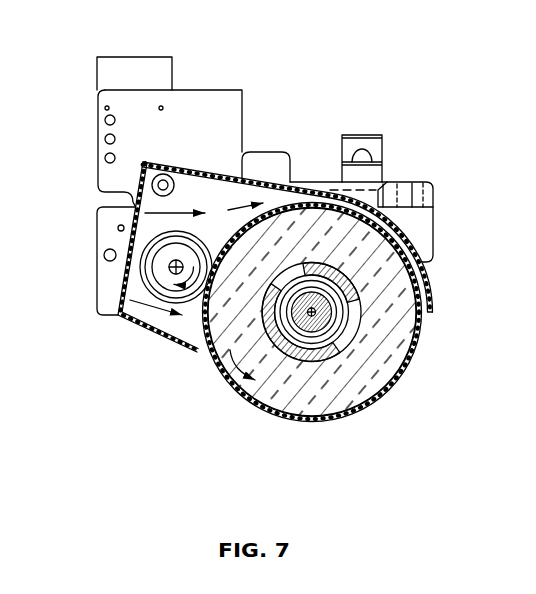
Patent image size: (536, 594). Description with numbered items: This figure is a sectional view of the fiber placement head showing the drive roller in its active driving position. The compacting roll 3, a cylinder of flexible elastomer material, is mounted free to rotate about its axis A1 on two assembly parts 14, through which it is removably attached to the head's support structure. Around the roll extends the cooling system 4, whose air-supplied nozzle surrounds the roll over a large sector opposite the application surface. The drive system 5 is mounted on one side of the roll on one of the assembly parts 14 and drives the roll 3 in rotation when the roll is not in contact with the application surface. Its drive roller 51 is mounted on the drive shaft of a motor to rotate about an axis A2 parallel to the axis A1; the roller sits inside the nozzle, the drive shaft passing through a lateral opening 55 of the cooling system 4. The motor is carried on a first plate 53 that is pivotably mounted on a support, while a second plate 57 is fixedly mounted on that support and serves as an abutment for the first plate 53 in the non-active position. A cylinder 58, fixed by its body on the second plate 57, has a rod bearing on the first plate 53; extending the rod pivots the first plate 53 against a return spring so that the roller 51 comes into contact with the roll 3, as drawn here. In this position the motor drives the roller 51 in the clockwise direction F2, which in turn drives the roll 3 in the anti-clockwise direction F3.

The roll 3 is at (362, 400).
The cooling system 4 is at (307, 183).
The drive system 5 is at (195, 88).
The assembly parts 14 is at (414, 182).
The drive roller 51 is at (162, 258).
The first plate 53 is at (107, 297).
The lateral opening 55 is at (156, 232).
The second plate 57 is at (100, 152).
The cylinder 58 is at (133, 62).
The axis of rotation of the roll A1 is at (311, 316).
The axis of rotation of the drive roller A2 is at (170, 268).
The clockwise direction F2 is at (190, 277).
The anti-clockwise direction F3 is at (236, 372).